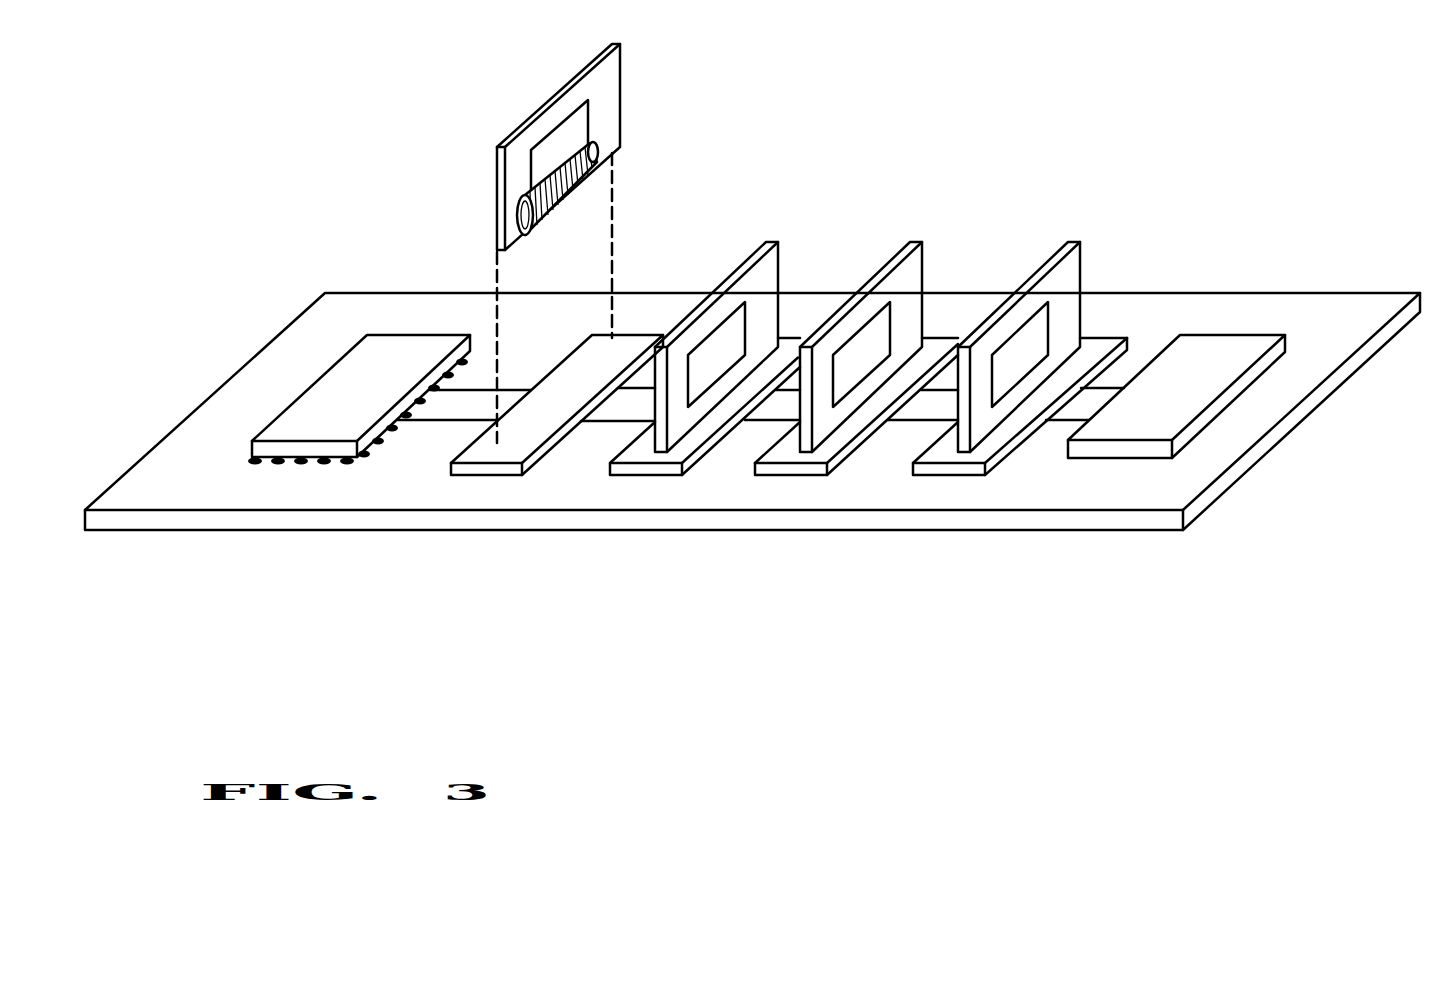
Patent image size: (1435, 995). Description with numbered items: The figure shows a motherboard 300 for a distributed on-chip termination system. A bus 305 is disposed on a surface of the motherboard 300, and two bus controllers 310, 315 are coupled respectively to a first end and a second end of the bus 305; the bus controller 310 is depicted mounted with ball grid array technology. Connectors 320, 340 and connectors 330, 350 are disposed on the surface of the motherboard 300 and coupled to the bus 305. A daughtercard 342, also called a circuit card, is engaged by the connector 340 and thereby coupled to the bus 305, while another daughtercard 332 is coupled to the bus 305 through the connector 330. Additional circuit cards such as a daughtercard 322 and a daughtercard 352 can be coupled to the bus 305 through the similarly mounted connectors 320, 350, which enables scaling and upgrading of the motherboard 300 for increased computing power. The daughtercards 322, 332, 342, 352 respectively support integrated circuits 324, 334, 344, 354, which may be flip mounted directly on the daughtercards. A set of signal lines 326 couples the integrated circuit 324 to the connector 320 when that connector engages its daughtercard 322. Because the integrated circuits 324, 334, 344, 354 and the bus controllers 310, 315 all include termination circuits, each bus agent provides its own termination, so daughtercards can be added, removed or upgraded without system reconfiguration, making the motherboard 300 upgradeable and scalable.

The motherboard 300 is at (1161, 603).
The bus 305 is at (440, 420).
The bus controller 310 is at (350, 436).
The bus controller 315 is at (1167, 432).
The connector 320 is at (570, 416).
The daughtercard 322 is at (580, 243).
The integrated circuit 324 is at (548, 150).
The set of signal lines 326 is at (552, 212).
The connector 330 is at (721, 347).
The daughtercard 332 is at (741, 336).
The integrated circuit 334 is at (698, 383).
The connector 340 is at (868, 358).
The daughtercard 342 is at (888, 347).
The integrated circuit 344 is at (855, 365).
The connector 350 is at (1030, 367).
The daughtercard 352 is at (1045, 367).
The integrated circuit 354 is at (998, 383).